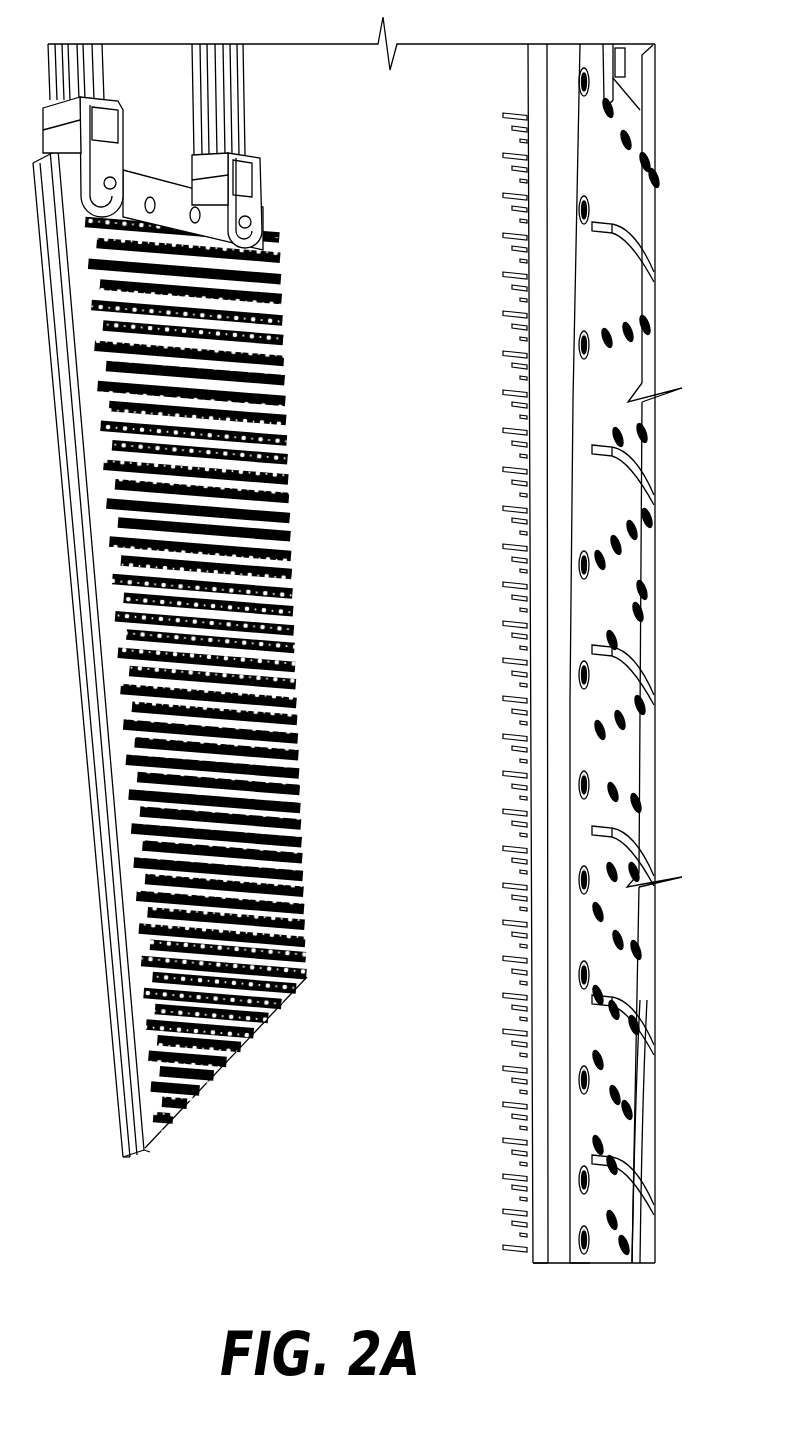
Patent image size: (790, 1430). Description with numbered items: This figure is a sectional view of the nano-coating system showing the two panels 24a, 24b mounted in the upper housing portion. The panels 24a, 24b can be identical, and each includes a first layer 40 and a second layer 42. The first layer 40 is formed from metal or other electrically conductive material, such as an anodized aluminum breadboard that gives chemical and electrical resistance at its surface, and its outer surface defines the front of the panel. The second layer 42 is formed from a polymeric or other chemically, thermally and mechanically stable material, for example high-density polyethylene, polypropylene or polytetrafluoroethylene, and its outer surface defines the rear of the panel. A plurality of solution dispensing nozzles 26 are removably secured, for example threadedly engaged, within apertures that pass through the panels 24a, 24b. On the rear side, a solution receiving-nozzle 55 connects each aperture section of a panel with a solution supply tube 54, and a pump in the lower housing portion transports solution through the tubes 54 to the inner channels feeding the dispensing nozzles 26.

The panel 24a is at (668, 513).
The panel 24b is at (172, 1141).
The solution dispensing nozzle 26 is at (502, 118).
The first layer 40 is at (140, 1155).
The second layer 42 is at (127, 1147).
The solution supply tube 54 is at (654, 268).
The solution receiving-nozzle 55 is at (603, 230).